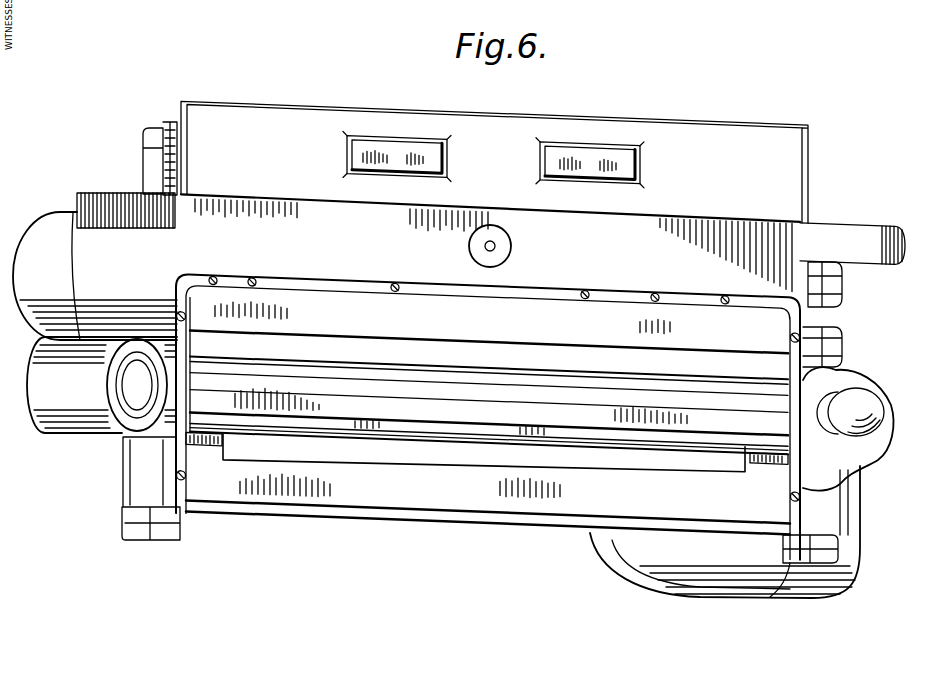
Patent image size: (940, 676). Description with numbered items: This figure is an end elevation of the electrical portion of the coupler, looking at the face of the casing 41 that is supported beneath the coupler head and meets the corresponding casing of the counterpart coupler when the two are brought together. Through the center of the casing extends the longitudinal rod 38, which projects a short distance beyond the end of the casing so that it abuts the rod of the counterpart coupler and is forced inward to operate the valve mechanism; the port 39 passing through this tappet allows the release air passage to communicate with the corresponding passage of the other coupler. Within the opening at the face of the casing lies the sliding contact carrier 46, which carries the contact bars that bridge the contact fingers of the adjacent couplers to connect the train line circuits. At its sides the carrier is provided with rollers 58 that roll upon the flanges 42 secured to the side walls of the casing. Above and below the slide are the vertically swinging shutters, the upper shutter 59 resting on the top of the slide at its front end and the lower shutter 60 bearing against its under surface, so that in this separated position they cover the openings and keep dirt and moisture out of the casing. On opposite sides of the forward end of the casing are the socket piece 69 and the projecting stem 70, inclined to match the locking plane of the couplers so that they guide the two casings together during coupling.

The rod 38 is at (511, 246).
The port 39 is at (485, 246).
The casing 41 is at (813, 307).
The flanges 42 is at (204, 450).
The sliding contact carrier 46 is at (482, 410).
The rollers 58 is at (755, 449).
The upper shutter 59 is at (369, 341).
The lower shutter 60 is at (389, 451).
The socket piece 69 is at (107, 433).
The projecting stem 70 is at (858, 413).